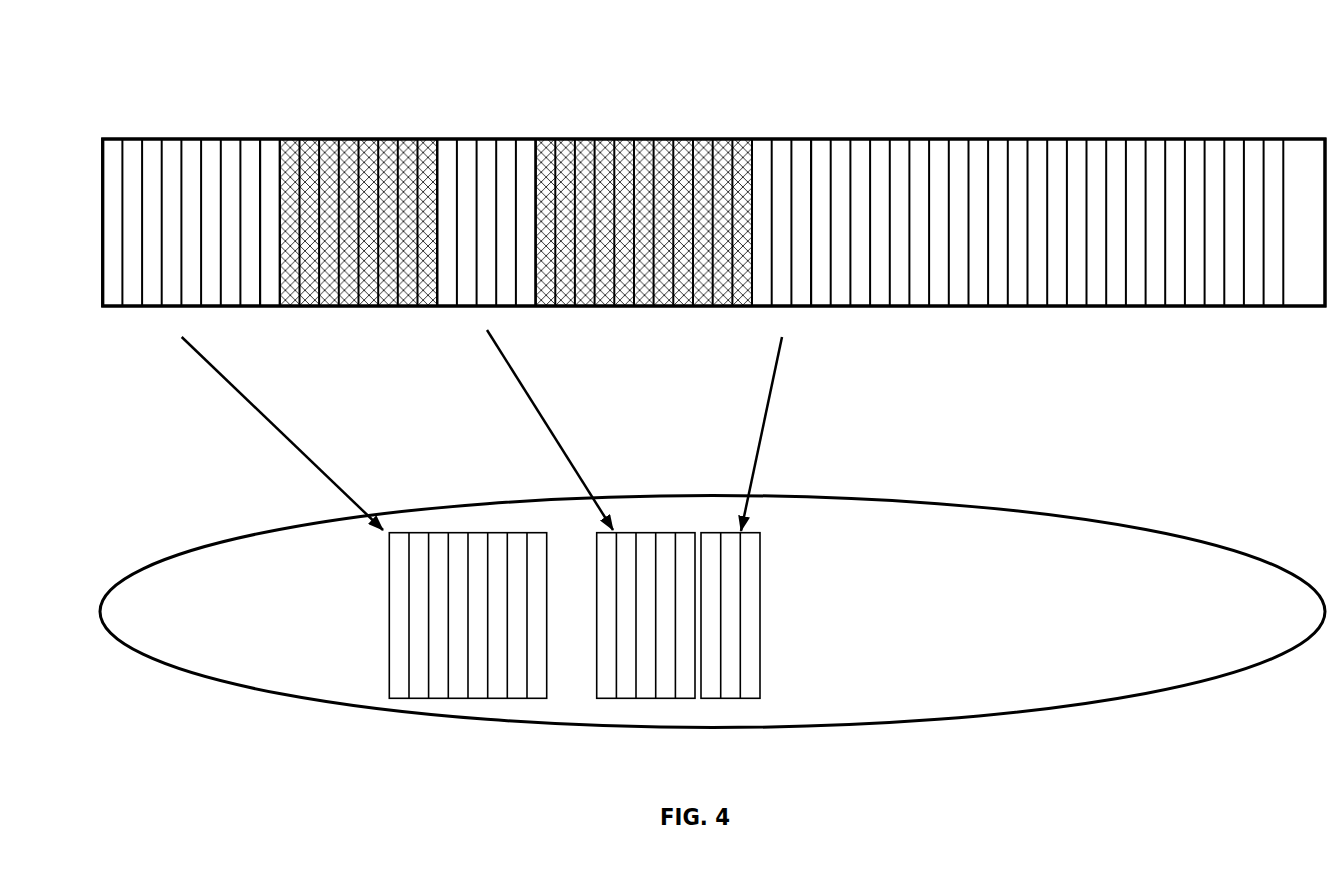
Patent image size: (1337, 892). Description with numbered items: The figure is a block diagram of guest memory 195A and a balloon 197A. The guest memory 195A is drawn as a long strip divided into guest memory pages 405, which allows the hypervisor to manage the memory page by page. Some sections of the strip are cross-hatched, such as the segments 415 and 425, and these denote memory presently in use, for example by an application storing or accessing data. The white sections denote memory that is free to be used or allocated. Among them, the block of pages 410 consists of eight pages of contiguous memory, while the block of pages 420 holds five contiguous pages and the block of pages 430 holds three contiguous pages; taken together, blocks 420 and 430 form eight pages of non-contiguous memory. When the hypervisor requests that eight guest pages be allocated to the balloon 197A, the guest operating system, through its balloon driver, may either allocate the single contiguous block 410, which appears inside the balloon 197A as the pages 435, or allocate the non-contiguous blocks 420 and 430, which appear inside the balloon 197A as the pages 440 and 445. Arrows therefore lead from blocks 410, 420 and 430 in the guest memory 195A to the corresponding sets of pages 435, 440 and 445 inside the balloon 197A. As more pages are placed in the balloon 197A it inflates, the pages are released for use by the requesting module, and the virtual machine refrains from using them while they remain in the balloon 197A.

The guest memory 195A is at (832, 139).
The balloon 197A is at (433, 713).
The guest memory pages 405 is at (114, 138).
The block of pages 410 is at (100, 313).
The segment of used memory 415 is at (437, 313).
The block of pages 420 is at (437, 313).
The segment of used memory 425 is at (752, 313).
The block of pages 430 is at (752, 313).
The balloon pages 435 is at (388, 603).
The balloon pages 440 is at (615, 700).
The balloon pages 445 is at (760, 585).